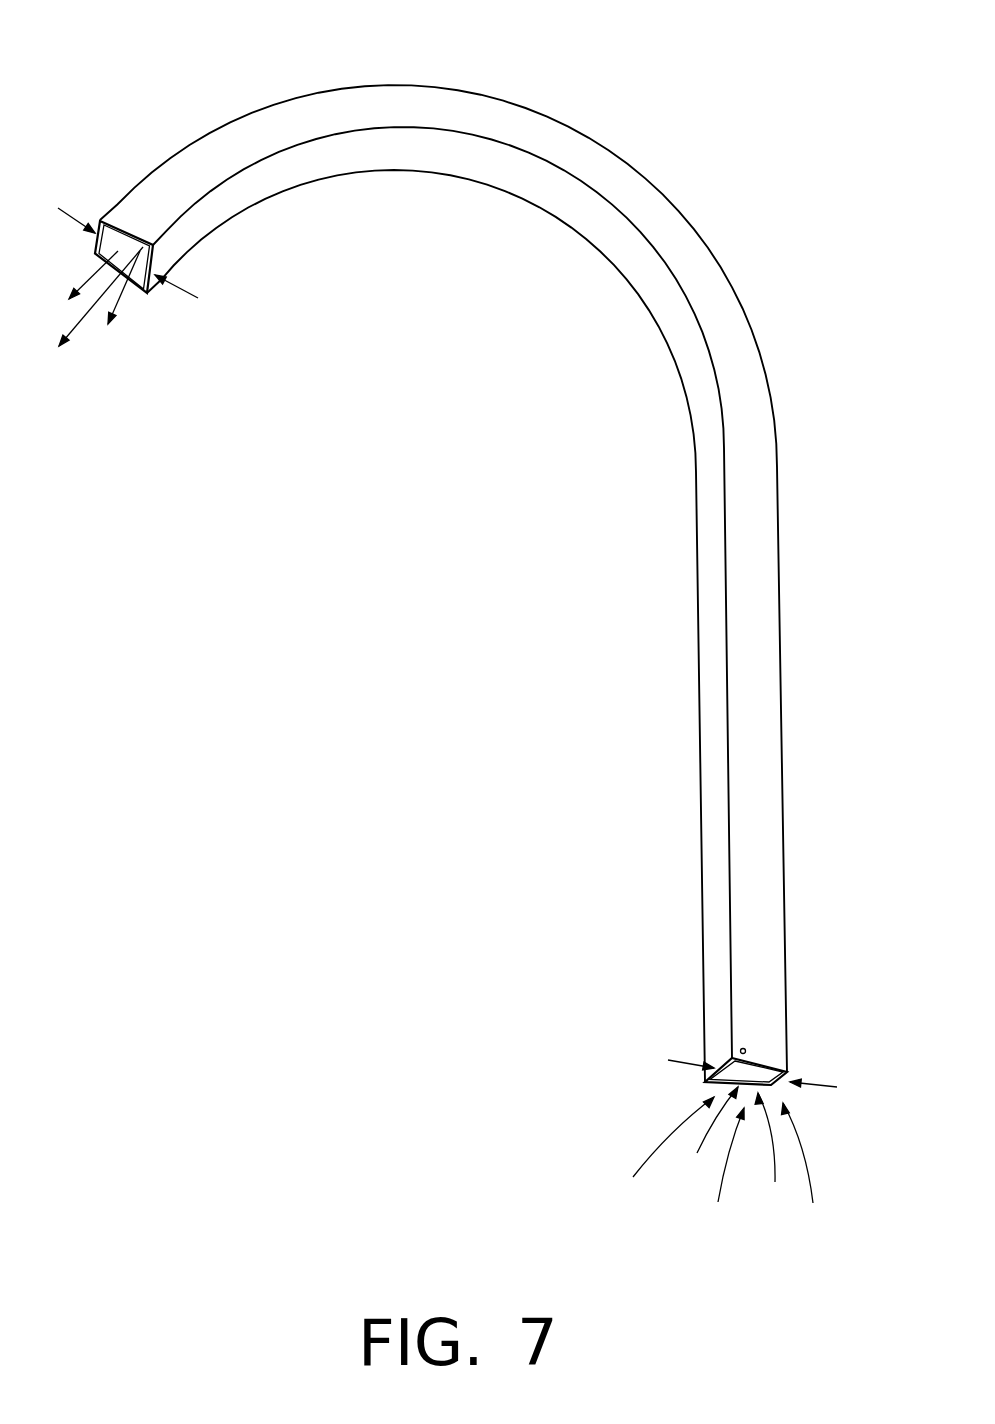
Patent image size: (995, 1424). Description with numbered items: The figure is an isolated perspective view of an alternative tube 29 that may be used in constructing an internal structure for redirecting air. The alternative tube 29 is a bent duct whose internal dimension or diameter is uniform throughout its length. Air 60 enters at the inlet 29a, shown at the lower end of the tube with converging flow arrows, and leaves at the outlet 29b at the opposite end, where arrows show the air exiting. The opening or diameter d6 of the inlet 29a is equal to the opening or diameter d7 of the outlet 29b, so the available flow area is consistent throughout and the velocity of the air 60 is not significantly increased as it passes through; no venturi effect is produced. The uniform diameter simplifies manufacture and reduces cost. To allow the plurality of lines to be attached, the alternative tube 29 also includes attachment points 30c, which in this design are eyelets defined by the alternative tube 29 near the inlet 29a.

The alternative tube 29 is at (213, 132).
The inlet 29a is at (747, 1070).
The outlet 29b is at (130, 246).
The attachment points 30c is at (743, 1048).
The air 60 is at (727, 1178).
The opening or diameter of the inlet d6 is at (752, 1075).
The opening or diameter of the outlet d7 is at (128, 251).